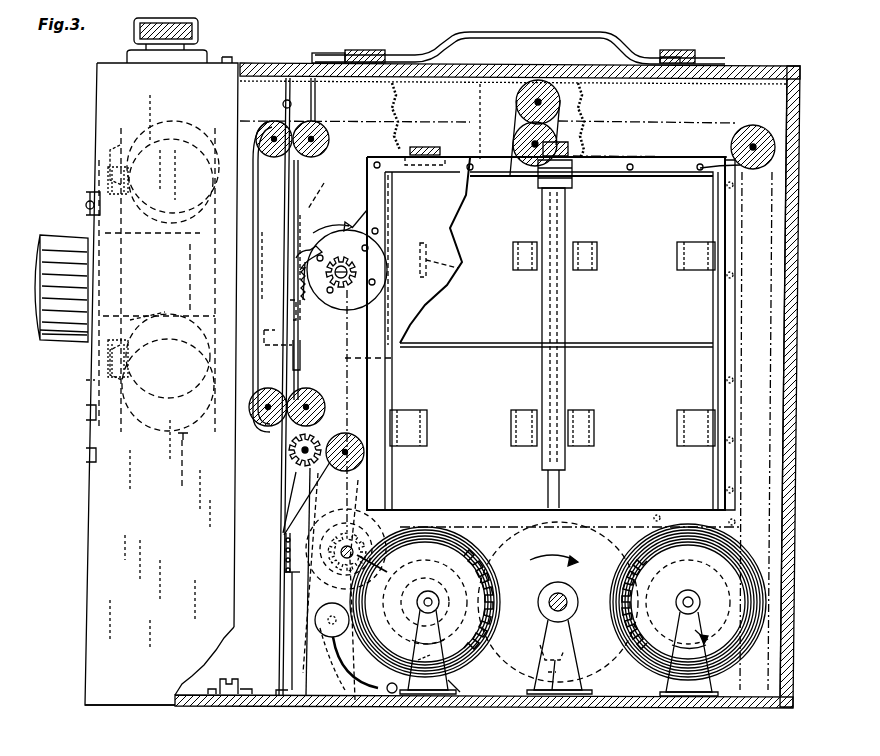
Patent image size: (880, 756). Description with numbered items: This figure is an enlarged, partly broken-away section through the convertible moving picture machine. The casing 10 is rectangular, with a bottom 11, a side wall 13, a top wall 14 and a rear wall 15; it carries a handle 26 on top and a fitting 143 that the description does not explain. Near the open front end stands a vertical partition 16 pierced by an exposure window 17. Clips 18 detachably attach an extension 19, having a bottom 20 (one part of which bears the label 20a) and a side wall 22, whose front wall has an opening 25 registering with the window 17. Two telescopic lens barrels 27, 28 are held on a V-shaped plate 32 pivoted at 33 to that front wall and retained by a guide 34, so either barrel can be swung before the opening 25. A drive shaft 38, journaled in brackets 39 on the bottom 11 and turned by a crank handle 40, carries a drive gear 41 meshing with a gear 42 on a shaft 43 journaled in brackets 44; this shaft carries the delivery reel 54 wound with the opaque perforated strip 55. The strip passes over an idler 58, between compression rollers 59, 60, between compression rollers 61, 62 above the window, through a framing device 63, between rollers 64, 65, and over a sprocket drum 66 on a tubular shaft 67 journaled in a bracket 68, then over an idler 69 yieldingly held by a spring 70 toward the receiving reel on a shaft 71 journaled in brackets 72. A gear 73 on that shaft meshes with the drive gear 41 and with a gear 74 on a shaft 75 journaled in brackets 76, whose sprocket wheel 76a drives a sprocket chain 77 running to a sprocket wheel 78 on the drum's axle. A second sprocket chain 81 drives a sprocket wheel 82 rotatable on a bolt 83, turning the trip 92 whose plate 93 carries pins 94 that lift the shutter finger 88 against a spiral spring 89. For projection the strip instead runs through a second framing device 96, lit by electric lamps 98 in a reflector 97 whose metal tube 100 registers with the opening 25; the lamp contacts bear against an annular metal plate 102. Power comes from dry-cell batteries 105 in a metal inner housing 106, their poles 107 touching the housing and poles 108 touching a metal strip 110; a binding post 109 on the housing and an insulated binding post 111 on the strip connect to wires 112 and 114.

The casing 10 is at (795, 330).
The bottom 11 is at (505, 700).
The side wall 13 is at (775, 98).
The top wall 14 is at (740, 75).
The rear wall 15 is at (785, 392).
The partition 16 is at (280, 643).
The exposure window 17 is at (282, 252).
The clips 18 is at (237, 63).
The extension 19 is at (84, 704).
The bottom 20 is at (200, 690).
The bracket 20a is at (460, 690).
The side wall 22 is at (97, 653).
The opening 25 is at (87, 230).
The handle 26 is at (630, 42).
The telescopic barrel 27 is at (44, 235).
The telescopic barrel 28 is at (57, 340).
The V-shaped plate 32 is at (88, 413).
The pivot 33 is at (86, 455).
The guide 34 is at (90, 192).
The drive shaft 38 is at (552, 596).
The brackets 39 is at (575, 690).
The crank handle 40 is at (532, 700).
The drive gear 41 is at (632, 670).
The gear 42 is at (726, 602).
The shaft 43 is at (690, 590).
The brackets 44 is at (700, 692).
The delivery reel 54 is at (762, 566).
The strip 55 is at (444, 120).
The idler 58 is at (778, 147).
The compression roller 59 is at (562, 100).
The compression roller 60 is at (560, 140).
The compression roller 61 is at (270, 121).
The compression roller 62 is at (300, 127).
The framing device 63 is at (326, 182).
The compression roller 64 is at (262, 426).
The compression roller 65 is at (318, 403).
The sprocket drum 66 is at (296, 470).
The tubular shaft 67 is at (289, 450).
The bracket 68 is at (284, 548).
The idler 69 is at (332, 637).
The spring 70 is at (358, 690).
The shaft 71 is at (434, 592).
The bearing bracket 72 is at (428, 694).
The gear 73 is at (492, 618).
The gear 74 is at (378, 580).
The shaft 75 is at (388, 572).
The brackets 76 is at (292, 582).
The sprocket wheel 76a is at (283, 573).
The sprocket chain 77 is at (372, 480).
The sprocket wheel 78 is at (296, 472).
The sprocket chain 81 is at (398, 358).
The sprocket wheel 82 is at (360, 282).
The bolt 83 is at (340, 310).
The finger 88 is at (300, 256).
The spiral spring 89 is at (292, 340).
The trip 92 is at (379, 230).
The plate 93 is at (367, 210).
The pins 94 is at (389, 250).
The second framing device 96 is at (238, 205).
The reflector 97 is at (175, 475).
The electric lamps 98 is at (200, 300).
The metal tube 100 is at (145, 330).
The annular metal plate 102 is at (84, 372).
The dry-cell batteries 105 is at (554, 342).
The inner housing 106 is at (730, 196).
The pole 107 is at (690, 242).
The pole 108 is at (515, 242).
The binding post 109 is at (440, 150).
The metal strip 110 is at (578, 348).
The binding post 111 is at (590, 150).
The wire 112 is at (392, 110).
The wire 114 is at (590, 120).
The knob 143 is at (198, 30).